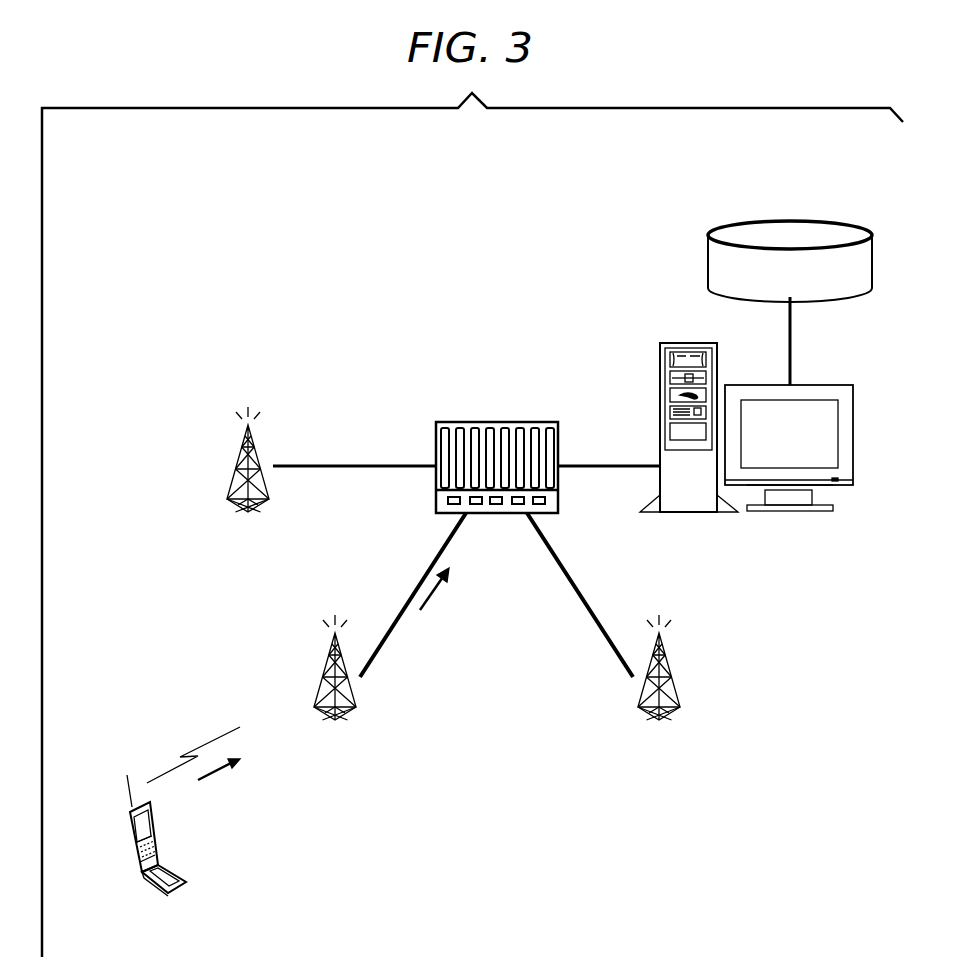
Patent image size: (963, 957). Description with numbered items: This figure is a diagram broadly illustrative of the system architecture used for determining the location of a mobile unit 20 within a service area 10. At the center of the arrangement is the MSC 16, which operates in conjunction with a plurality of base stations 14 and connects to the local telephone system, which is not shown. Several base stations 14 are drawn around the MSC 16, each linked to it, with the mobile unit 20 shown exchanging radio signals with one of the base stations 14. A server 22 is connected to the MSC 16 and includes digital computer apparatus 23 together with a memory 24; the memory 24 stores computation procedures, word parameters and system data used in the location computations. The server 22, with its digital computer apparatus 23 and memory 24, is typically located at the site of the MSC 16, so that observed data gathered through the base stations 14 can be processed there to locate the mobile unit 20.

The service area 10 is at (502, 760).
The base station 14 is at (708, 666).
The MSC 16 is at (500, 425).
The mobile unit 20 is at (190, 881).
The server 22 is at (660, 372).
The digital computer apparatus 23 is at (853, 413).
The memory 24 is at (782, 220).